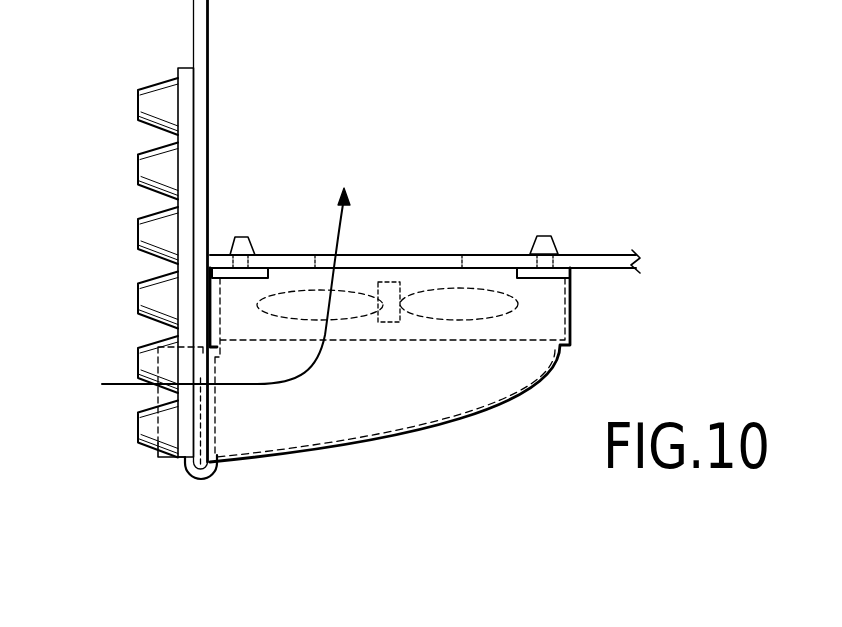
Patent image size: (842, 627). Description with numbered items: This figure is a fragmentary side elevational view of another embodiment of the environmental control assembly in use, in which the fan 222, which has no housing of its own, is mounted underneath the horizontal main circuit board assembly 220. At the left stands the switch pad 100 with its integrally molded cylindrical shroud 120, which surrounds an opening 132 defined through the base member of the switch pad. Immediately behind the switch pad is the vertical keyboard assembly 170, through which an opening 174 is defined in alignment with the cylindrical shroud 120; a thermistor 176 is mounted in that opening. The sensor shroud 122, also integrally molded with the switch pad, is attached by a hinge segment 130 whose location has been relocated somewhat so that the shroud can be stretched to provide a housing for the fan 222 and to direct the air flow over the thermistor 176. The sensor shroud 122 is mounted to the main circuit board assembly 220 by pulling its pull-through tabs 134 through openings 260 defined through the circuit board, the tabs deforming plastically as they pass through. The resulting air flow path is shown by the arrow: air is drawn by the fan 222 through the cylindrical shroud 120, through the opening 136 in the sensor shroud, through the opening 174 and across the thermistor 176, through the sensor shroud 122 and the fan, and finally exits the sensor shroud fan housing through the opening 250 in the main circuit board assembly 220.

The switch pad 100 is at (114, 263).
The cylindrical shroud 120 is at (167, 392).
The sensor shroud 122 is at (423, 408).
The hinge segment 130 is at (203, 479).
The opening 132 is at (184, 422).
The pull-through tabs 134 is at (241, 236).
The opening 136 is at (212, 425).
The keyboard assembly 170 is at (200, 117).
The opening 174 is at (202, 402).
The thermistor 176 is at (158, 371).
The horizontal main circuit board assembly 220 is at (605, 265).
The fan 222 is at (350, 300).
The opening 250 is at (427, 248).
The openings 260 is at (568, 246).